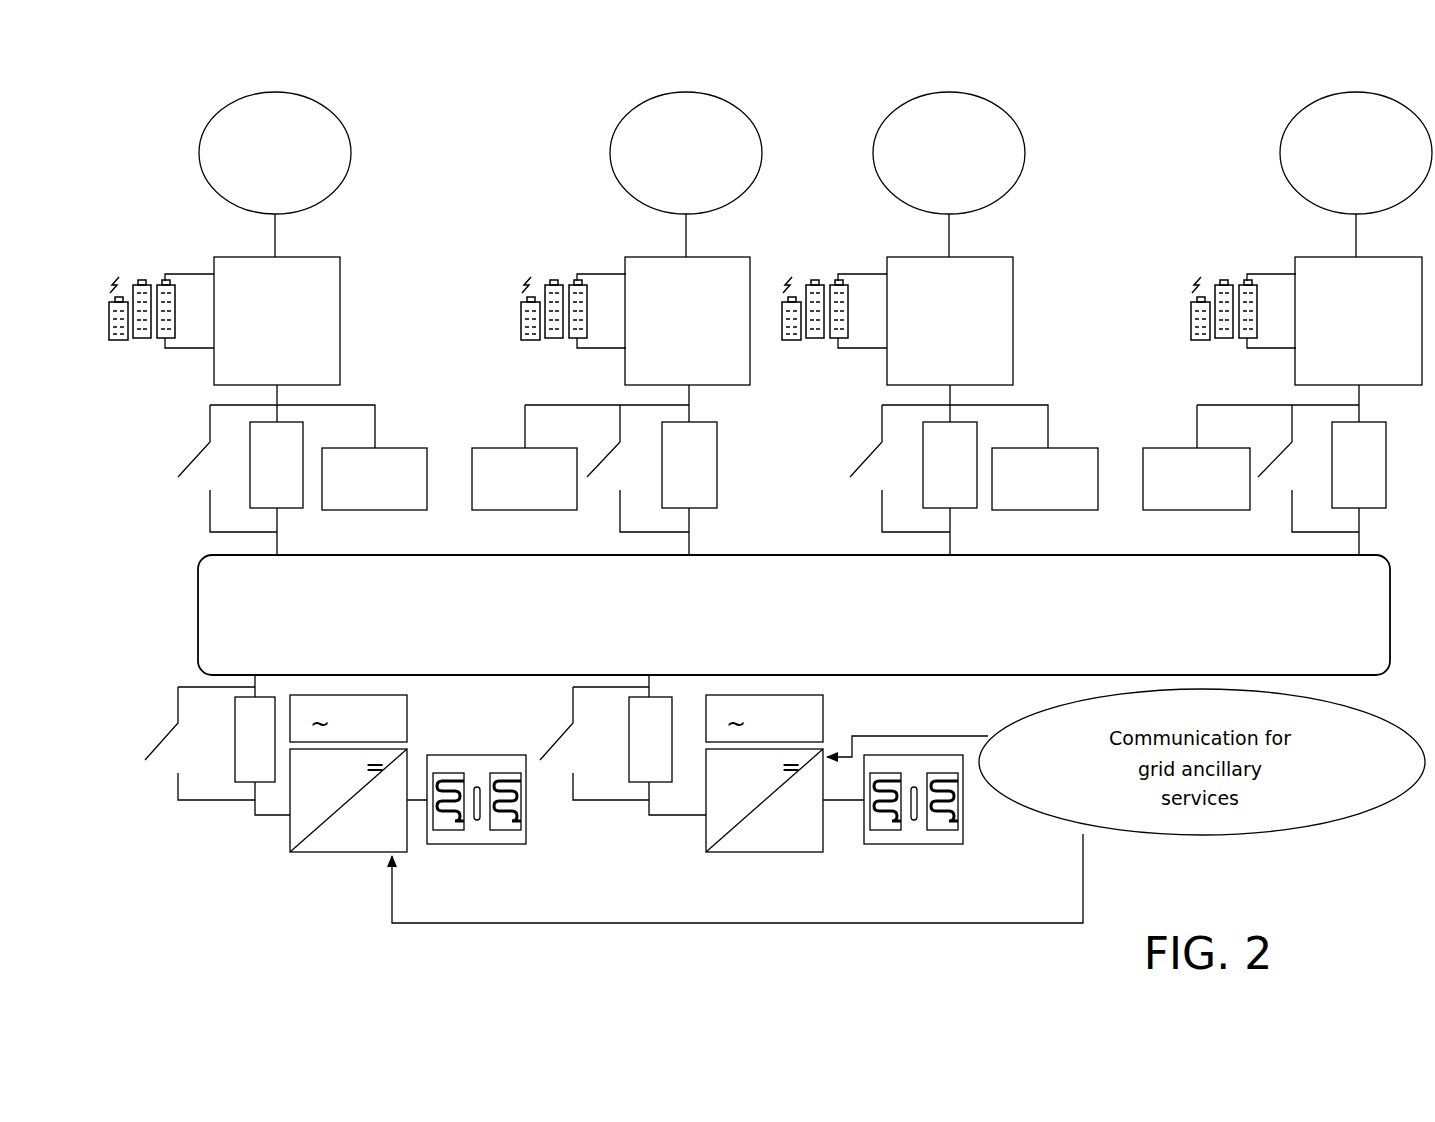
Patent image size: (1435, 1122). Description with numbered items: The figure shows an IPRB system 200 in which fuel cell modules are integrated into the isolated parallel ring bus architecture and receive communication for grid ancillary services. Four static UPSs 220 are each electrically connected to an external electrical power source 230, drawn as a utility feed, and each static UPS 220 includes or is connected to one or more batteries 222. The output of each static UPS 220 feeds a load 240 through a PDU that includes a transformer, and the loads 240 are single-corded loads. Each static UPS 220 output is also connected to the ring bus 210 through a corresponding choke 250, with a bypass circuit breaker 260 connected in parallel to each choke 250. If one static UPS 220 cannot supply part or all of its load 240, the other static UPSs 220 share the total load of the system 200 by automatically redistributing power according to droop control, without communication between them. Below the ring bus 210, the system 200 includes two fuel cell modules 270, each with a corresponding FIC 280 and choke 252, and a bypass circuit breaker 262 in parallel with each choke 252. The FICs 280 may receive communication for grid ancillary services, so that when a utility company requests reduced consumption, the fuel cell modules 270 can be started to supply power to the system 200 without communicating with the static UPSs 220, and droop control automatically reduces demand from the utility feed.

The IPRB system 200 is at (198, 101).
The ring bus 210 is at (196, 622).
The static UPS 220 is at (350, 318).
The batteries 222 is at (128, 256).
The external electrical power source 230 is at (593, 152).
The load 240 is at (490, 440).
The choke 250 is at (238, 446).
The choke 252 is at (245, 797).
The bypass circuit breaker 260 is at (198, 477).
The bypass circuit breaker 262 is at (155, 768).
The fuel cell module 270 is at (480, 869).
The FIC 280 is at (352, 868).